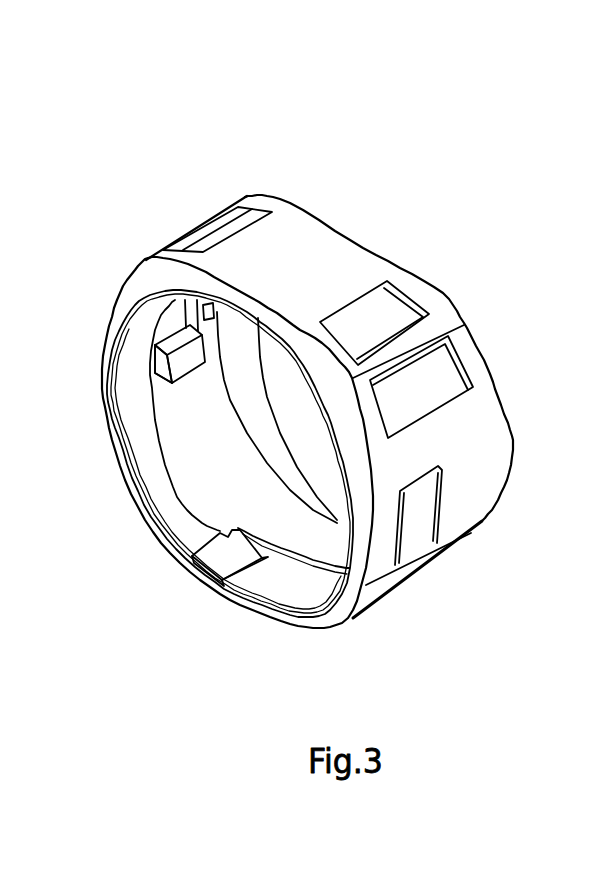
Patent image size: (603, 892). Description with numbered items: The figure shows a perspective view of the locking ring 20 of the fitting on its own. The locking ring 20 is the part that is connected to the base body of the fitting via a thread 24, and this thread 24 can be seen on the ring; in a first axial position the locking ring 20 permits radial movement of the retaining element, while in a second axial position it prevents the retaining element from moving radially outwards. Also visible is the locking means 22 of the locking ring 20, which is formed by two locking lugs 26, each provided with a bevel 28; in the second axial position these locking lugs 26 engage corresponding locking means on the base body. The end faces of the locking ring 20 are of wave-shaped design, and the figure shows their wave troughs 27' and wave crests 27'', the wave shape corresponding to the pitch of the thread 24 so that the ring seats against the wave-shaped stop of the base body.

The locking ring 20 is at (178, 183).
The locking means 22 is at (168, 323).
The thread 24 is at (280, 548).
The locking lug 26 is at (183, 368).
The wave trough 27' is at (296, 267).
The wave crest 27'' is at (363, 406).
The bevel 28 is at (155, 373).